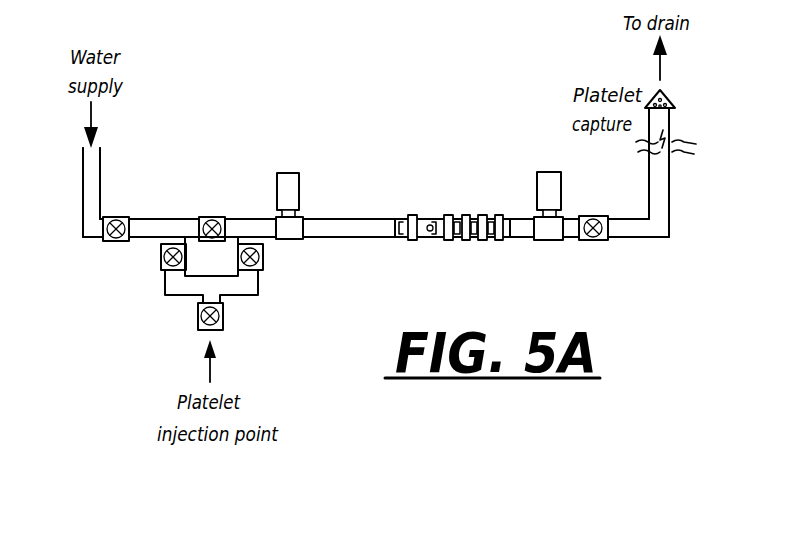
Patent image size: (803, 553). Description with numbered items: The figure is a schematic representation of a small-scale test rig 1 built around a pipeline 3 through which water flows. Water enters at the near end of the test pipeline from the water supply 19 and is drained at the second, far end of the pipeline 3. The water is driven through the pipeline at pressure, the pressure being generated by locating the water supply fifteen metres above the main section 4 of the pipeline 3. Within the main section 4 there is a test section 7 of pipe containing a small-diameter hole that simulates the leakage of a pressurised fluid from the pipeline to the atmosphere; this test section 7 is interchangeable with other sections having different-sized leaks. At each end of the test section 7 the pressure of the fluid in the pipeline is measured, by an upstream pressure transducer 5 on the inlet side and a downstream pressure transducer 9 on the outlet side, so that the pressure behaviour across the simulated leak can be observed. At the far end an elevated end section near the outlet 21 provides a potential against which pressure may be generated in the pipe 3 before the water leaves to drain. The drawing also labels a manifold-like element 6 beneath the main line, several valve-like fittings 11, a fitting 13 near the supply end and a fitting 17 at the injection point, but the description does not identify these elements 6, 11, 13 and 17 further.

The small-scale test rig 1 is at (414, 62).
The pipeline 3 is at (93, 186).
The main section 4 is at (372, 196).
The upstream pressure transducer 5 is at (293, 190).
The injection manifold 6 is at (255, 280).
The test section 7 is at (450, 196).
The downstream pressure transducer 9 is at (547, 231).
The valve 11 is at (207, 218).
The supply valve 13 is at (118, 218).
The platelet injection valve 17 is at (198, 316).
The water supply 19 is at (100, 147).
The outlet 21 is at (670, 118).